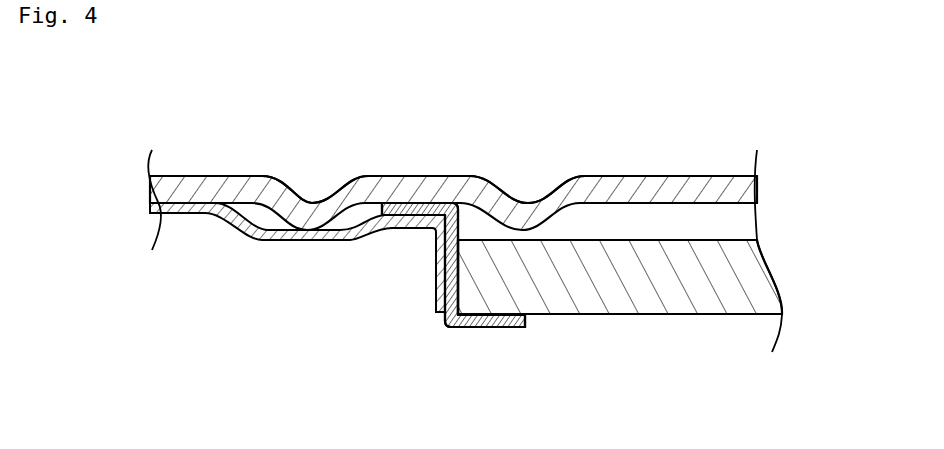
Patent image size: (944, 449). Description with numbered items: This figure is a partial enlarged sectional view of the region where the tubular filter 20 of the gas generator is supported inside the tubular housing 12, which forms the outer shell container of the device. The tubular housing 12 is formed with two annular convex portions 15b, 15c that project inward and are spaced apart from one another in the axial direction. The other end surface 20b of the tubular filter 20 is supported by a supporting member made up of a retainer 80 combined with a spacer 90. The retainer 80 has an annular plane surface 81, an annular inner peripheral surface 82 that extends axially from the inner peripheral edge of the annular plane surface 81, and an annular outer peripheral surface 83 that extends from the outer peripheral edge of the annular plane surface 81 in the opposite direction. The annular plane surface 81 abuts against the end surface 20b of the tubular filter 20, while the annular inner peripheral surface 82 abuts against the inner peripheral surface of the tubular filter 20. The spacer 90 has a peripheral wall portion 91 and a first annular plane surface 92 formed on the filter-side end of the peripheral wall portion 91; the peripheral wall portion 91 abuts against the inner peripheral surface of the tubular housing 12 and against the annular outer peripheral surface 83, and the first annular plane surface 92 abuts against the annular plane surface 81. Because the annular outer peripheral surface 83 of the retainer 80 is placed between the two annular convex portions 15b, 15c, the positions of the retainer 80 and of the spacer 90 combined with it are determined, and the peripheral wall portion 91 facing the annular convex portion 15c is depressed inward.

The tubular housing 12 is at (674, 177).
The annular convex portion 15b is at (518, 197).
The annular convex portion 15c is at (313, 197).
The tubular filter 20 is at (625, 290).
The other end surface 20b is at (460, 266).
The retainer 80 is at (461, 337).
The annular plane surface 81 is at (465, 295).
The annular inner peripheral surface 82 is at (495, 329).
The annular outer peripheral surface 83 is at (415, 202).
The spacer 90 is at (293, 256).
The peripheral wall portion 91 is at (180, 215).
The first annular plane surface 92 is at (436, 268).